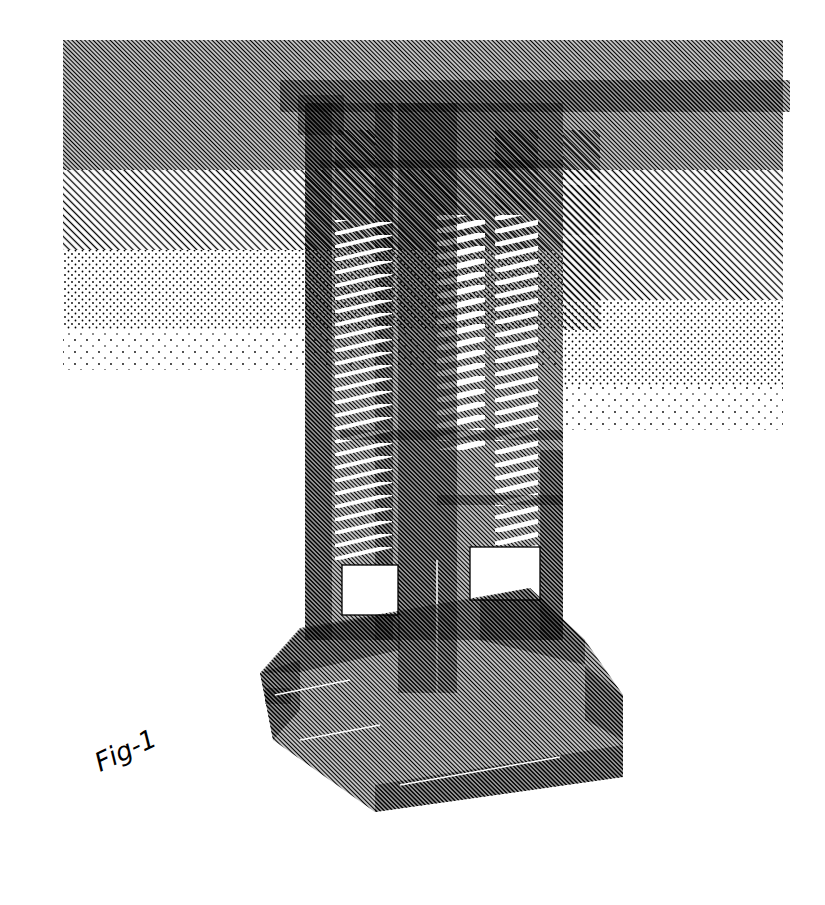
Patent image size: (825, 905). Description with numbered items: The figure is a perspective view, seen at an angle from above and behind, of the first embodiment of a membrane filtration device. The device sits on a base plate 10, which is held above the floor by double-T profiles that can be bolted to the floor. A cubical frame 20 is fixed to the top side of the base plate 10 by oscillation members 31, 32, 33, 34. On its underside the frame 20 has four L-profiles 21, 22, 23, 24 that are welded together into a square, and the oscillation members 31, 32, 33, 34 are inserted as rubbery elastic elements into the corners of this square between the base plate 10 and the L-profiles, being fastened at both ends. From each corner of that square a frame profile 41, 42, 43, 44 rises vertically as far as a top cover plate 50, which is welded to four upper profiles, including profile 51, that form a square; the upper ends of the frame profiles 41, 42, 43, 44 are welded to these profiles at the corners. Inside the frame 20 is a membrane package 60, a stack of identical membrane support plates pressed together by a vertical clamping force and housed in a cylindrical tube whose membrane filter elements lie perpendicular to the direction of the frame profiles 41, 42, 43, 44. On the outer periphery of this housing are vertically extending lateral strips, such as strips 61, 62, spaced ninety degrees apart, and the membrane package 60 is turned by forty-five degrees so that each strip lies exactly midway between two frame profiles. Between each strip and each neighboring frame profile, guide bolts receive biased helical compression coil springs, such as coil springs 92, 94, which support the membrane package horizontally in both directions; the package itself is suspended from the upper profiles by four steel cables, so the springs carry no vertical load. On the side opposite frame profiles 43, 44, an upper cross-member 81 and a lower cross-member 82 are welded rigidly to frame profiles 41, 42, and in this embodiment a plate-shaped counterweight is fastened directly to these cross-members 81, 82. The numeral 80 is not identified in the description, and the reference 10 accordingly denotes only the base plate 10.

The base plate 10 is at (292, 672).
The frame 20 is at (590, 400).
The L-profile 21 is at (300, 630).
The L-profile 22 is at (577, 643).
The L-profile 23 is at (487, 603).
The L-profile 24 is at (375, 598).
The oscillation member 31 is at (297, 668).
The oscillation member 32 is at (608, 756).
The oscillation member 33 is at (563, 433).
The oscillation member 34 is at (563, 573).
The frame profile 41 is at (270, 698).
The frame profile 42 is at (563, 553).
The frame profile 43 is at (350, 595).
The frame profile 44 is at (340, 265).
The top cover plate 50 is at (425, 82).
The profile 51 is at (306, 92).
The membrane package 60 is at (587, 218).
The lateral strip 61 is at (340, 300).
The lateral strip 62 is at (335, 210).
The clamp 80 is at (597, 256).
The upper cross-member 81 is at (322, 166).
The lower cross-member 82 is at (563, 503).
The coil spring 92 is at (345, 410).
The coil spring 94 is at (345, 388).